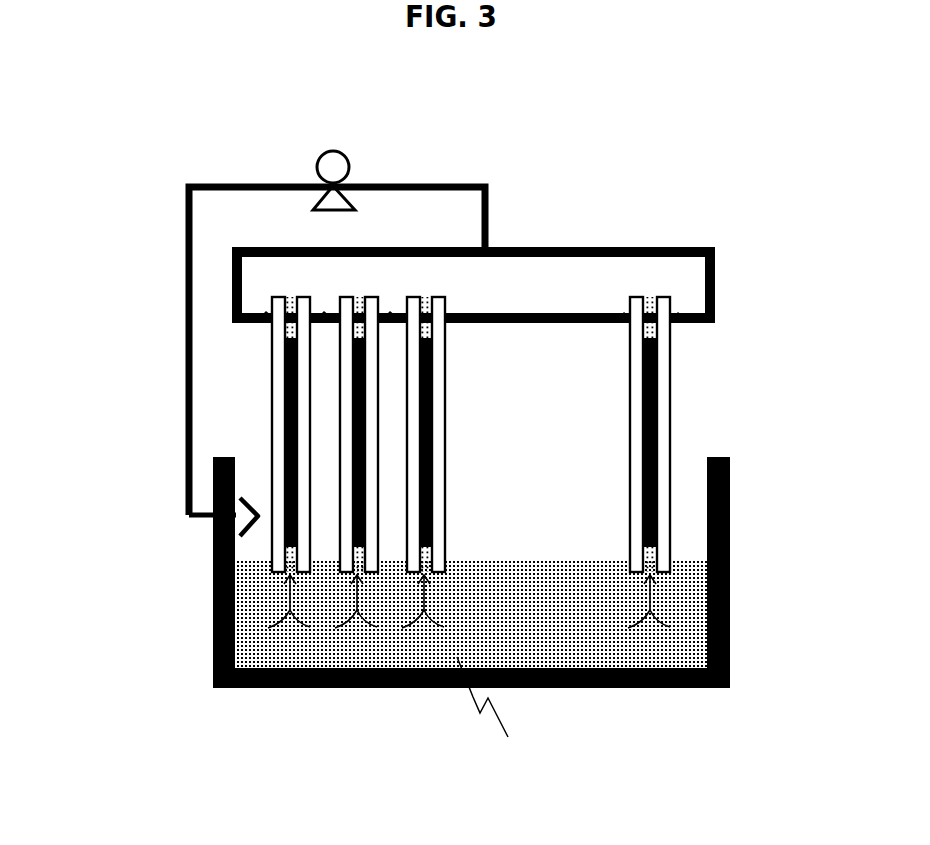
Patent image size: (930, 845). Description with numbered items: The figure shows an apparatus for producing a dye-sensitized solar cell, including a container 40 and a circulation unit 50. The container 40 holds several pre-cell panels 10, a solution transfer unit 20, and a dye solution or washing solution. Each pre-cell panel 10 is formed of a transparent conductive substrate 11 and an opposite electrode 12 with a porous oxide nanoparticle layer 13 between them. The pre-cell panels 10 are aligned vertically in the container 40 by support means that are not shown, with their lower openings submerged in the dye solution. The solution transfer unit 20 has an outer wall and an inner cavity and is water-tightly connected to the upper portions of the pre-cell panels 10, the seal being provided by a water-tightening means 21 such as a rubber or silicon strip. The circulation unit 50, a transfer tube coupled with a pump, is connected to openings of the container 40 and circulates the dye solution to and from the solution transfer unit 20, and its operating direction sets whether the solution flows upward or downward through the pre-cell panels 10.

The pre-cell panel 10 is at (537, 436).
The transparent conductive substrate 11 is at (640, 410).
The opposite electrode 12 is at (666, 415).
The porous oxide nanoparticle layer 13 is at (648, 468).
The solution transfer unit 20 is at (728, 250).
The water-tightening means 21 is at (621, 327).
The container 40 is at (733, 625).
The circulation unit 50 is at (183, 478).